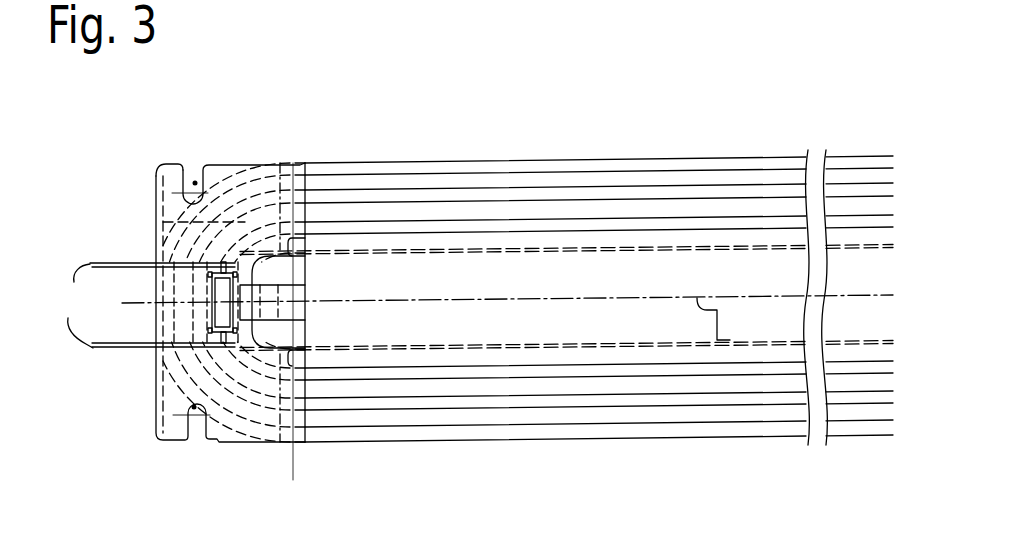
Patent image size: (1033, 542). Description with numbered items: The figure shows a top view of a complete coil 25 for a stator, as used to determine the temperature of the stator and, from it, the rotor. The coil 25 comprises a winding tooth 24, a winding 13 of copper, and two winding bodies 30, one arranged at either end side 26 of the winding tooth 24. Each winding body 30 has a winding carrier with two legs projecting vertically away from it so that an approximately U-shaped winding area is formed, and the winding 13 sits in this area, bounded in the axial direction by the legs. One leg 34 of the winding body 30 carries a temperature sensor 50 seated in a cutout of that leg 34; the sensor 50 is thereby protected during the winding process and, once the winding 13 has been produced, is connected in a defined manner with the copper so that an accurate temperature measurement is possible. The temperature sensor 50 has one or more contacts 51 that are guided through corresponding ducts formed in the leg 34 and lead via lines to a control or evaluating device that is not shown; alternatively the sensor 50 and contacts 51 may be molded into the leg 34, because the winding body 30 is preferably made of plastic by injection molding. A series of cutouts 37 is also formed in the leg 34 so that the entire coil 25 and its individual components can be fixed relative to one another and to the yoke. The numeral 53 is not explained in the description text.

The winding 13 is at (517, 183).
The winding tooth 24 is at (643, 268).
The coil 25 is at (399, 136).
The end side 26 is at (297, 276).
The winding body 30 is at (100, 159).
The leg 34 is at (158, 168).
The cutouts 37 is at (197, 186).
The temperature sensor 50 is at (210, 300).
The contacts 51 is at (472, 305).
The bearing housing wall 53 is at (177, 260).